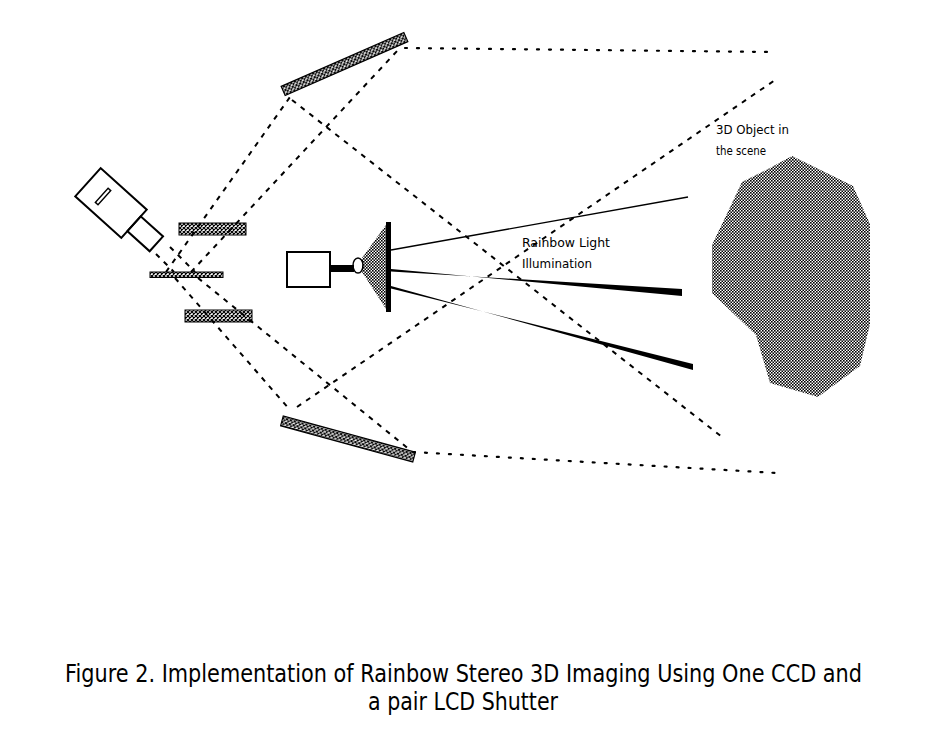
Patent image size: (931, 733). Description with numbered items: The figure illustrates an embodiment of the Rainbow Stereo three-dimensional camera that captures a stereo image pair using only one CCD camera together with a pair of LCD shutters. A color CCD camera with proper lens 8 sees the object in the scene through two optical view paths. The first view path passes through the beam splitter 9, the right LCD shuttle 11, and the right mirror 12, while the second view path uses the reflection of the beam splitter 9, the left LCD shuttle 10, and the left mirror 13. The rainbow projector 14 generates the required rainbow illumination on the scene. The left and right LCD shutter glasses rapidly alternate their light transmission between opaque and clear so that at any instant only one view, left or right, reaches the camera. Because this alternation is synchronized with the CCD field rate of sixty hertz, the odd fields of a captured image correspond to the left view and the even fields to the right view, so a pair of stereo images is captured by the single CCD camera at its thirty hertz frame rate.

The color CCD camera with proper lens 8 is at (94, 201).
The beam splitter 9 is at (136, 276).
The left LCD shuttle 10 is at (210, 195).
The right LCD shuttle 11 is at (214, 335).
The right mirror 12 is at (316, 439).
The left mirror 13 is at (294, 60).
The rainbow projector 14 is at (339, 247).